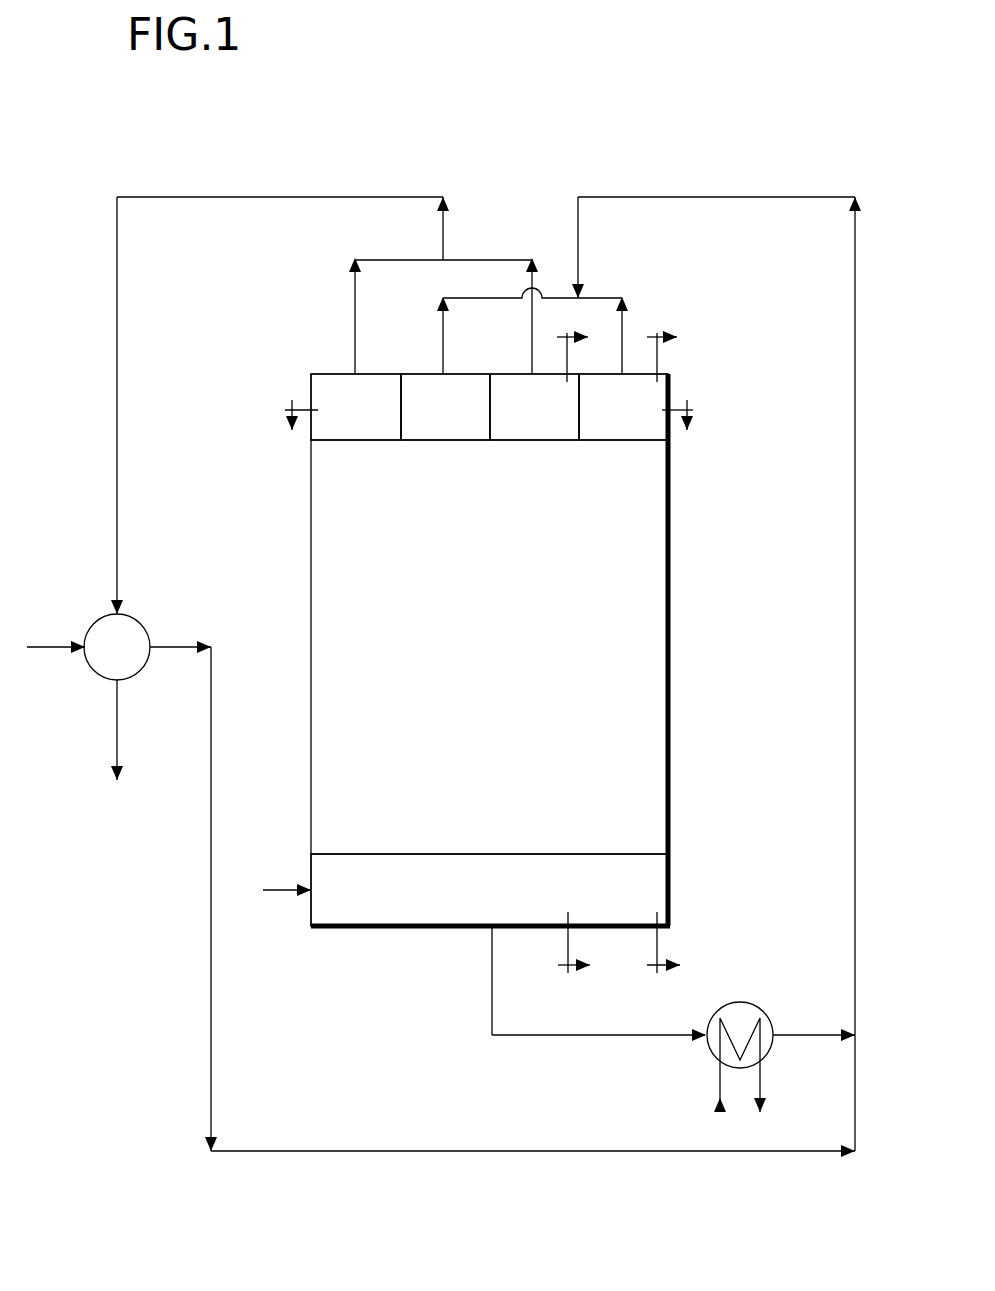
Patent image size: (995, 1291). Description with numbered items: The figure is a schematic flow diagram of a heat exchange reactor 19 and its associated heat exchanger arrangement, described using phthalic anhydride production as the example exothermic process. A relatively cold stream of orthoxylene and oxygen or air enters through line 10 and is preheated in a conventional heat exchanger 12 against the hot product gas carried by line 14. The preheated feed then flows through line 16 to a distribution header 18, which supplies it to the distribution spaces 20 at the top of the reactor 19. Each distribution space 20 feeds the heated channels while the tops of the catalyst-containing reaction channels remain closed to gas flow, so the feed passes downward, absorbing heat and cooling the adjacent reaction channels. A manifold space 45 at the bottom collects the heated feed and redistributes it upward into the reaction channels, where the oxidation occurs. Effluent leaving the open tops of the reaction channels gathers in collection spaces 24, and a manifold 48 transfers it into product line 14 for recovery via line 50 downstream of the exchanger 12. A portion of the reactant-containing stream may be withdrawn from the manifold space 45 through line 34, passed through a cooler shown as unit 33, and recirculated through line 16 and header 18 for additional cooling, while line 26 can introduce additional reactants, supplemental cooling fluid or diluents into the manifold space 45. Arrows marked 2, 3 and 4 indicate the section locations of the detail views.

The side stream outlet 2 is at (674, 652).
The side stream outlet 3 is at (585, 652).
The side stream outlet 4 is at (489, 435).
The line 10 is at (52, 646).
The heat exchanger 12 is at (140, 627).
The line 14 is at (117, 380).
The line 16 is at (792, 196).
The distribution header 18 is at (603, 298).
The heat exchange reactor 19 is at (690, 670).
The distribution space 20 is at (424, 424).
The collection space 24 is at (334, 424).
The line 26 is at (279, 889).
The pump motor 33 is at (748, 1006).
The line 34 is at (615, 1037).
The manifold space 45 is at (510, 907).
The manifold 48 is at (490, 259).
The line 50 is at (118, 724).